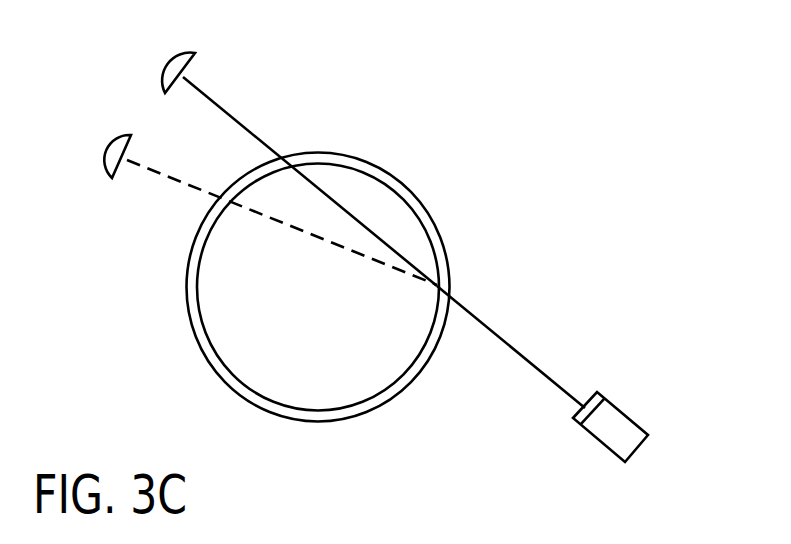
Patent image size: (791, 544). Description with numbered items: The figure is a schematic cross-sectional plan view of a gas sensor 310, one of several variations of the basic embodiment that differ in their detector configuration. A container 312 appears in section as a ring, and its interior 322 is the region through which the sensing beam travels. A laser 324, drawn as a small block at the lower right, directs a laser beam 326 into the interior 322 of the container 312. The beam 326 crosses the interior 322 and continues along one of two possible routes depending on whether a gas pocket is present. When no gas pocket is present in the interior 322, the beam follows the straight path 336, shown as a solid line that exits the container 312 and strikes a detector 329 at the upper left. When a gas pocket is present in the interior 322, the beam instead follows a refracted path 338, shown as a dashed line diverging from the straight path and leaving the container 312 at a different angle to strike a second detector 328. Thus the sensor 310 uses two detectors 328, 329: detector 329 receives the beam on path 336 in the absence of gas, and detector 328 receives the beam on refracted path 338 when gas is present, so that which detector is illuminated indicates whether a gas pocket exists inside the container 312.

The sensor 310 is at (398, 160).
The container 312 is at (427, 210).
The interior 322 is at (360, 378).
The laser 324 is at (617, 407).
The laser beam 326 is at (498, 333).
The detector 328 is at (113, 152).
The detector 329 is at (193, 58).
The path 336 is at (237, 115).
The refracted path 338 is at (182, 185).